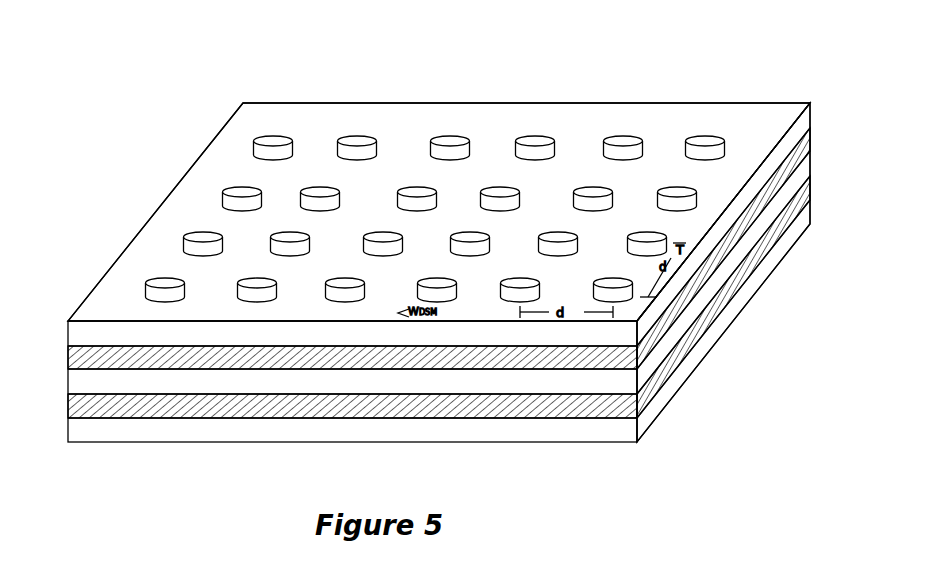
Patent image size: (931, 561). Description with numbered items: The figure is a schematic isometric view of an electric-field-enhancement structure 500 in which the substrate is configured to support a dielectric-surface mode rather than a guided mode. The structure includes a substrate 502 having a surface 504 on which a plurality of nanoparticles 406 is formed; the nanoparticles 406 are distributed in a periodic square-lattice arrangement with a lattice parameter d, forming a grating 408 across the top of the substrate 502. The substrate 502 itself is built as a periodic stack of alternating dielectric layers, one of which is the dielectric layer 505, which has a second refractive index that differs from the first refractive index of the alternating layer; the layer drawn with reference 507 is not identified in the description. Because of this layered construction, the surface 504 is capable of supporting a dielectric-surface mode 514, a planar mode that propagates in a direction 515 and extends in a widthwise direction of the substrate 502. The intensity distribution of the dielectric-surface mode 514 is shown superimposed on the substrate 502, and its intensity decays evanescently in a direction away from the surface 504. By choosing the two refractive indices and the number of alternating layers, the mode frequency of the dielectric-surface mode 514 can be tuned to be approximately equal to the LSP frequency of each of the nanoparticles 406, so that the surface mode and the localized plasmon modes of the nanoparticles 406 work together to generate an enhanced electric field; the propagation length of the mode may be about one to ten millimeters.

The nanoparticles 406 is at (273, 138).
The grating 408 is at (160, 223).
The electric-field-enhancement structure 500 is at (727, 52).
The substrate 502 is at (836, 208).
The surface 504 is at (772, 117).
The dielectric layer 505 is at (767, 278).
The second conductive layer 507 is at (763, 254).
The dielectric-surface mode 514 is at (387, 296).
The direction 515 is at (460, 332).